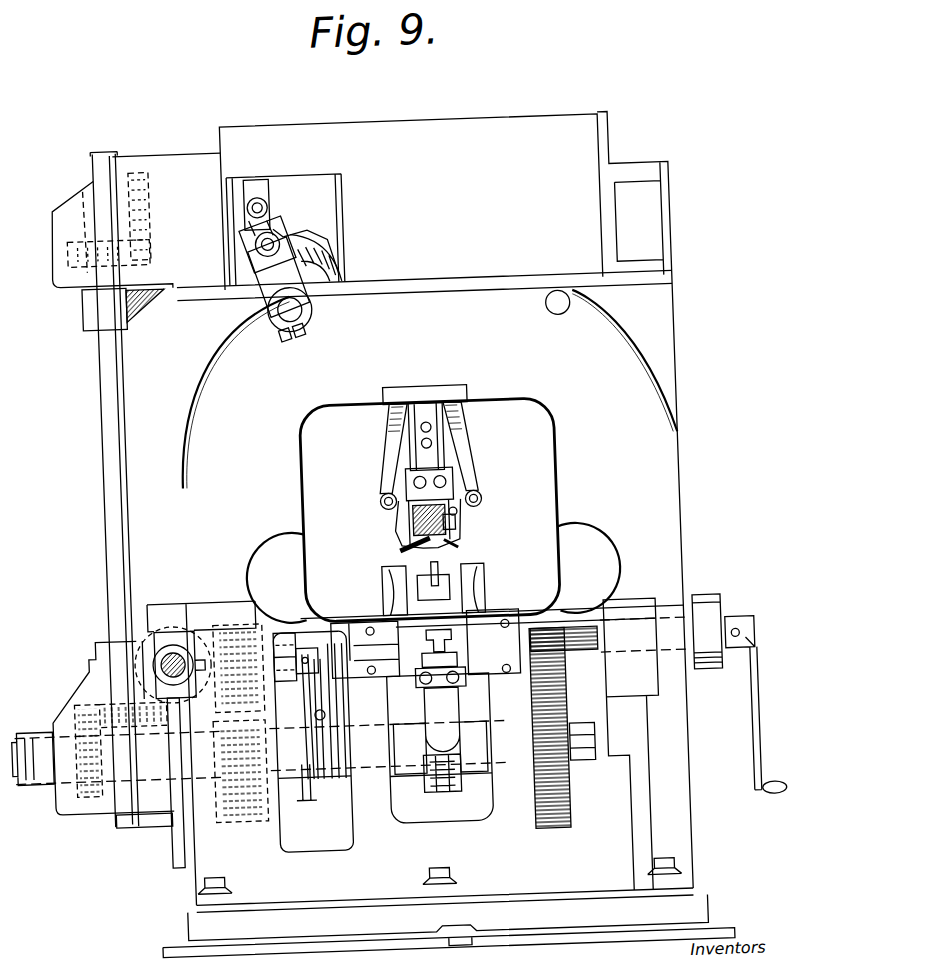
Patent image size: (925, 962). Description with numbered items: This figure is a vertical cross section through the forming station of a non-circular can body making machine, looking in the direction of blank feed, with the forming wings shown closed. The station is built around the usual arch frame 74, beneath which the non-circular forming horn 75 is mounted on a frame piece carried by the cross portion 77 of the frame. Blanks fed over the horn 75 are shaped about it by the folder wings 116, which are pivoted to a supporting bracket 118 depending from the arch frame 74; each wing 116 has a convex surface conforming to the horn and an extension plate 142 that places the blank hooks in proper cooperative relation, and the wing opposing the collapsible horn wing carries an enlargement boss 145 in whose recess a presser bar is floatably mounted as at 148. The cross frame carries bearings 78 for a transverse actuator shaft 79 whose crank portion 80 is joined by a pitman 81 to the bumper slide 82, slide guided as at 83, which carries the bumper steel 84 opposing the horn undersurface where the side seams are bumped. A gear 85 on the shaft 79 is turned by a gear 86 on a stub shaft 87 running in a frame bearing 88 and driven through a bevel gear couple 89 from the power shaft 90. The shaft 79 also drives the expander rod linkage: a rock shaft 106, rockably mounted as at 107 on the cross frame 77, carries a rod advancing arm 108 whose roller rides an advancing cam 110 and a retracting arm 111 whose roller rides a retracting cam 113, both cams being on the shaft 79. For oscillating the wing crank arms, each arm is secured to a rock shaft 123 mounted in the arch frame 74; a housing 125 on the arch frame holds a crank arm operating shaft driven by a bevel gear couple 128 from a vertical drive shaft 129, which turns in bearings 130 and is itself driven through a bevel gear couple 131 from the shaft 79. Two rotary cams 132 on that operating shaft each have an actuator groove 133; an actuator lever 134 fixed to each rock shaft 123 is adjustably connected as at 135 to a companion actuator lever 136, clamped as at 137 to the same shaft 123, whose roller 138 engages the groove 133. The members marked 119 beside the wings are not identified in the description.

The arch frame 74 is at (432, 533).
The forming horn 75 is at (421, 510).
The cross portion of the frame 77 is at (545, 616).
The bearings 78 is at (366, 768).
The actuator shaft 79 is at (154, 757).
The crank portion 80 is at (404, 778).
The pitman 81 is at (444, 691).
The bumper slide 82 is at (455, 613).
The slide guide 83 is at (478, 590).
The bumper steel 84 is at (440, 580).
The gear 85 is at (234, 780).
The gear 86 is at (260, 574).
The stub shaft 87 is at (318, 608).
The frame bearing 88 is at (284, 640).
The bevel gear couple 89 is at (199, 615).
The power shaft 90 is at (171, 636).
The rock shaft 106 is at (356, 617).
The rockable mounting 107 is at (314, 704).
The rod advancing arm 108 is at (321, 718).
The advancing cam 110 is at (331, 787).
The retracting arm 111 is at (334, 734).
The retracting cam 113 is at (298, 783).
The folder wings 116 is at (408, 509).
The supporting bracket 118 is at (445, 405).
The jaw arm 119 is at (406, 429).
The rock shaft 123 is at (302, 305).
The housing 125 is at (557, 104).
The bevel gear couple 128 is at (105, 155).
The drive shaft 129 is at (112, 396).
The bearings 130 is at (102, 305).
The bevel gear couple 131 is at (71, 700).
The rotary cams 132 is at (333, 234).
The actuator groove 133 is at (272, 186).
The actuator lever 134 is at (296, 270).
The adjustable connection 135 is at (334, 246).
The companion actuator lever 136 is at (288, 217).
The adjustable clamp 137 is at (301, 340).
The roller 138 is at (286, 180).
The extension plate 142 is at (425, 540).
The enlargement boss 145 is at (471, 511).
The floatable mounting 148 is at (466, 526).